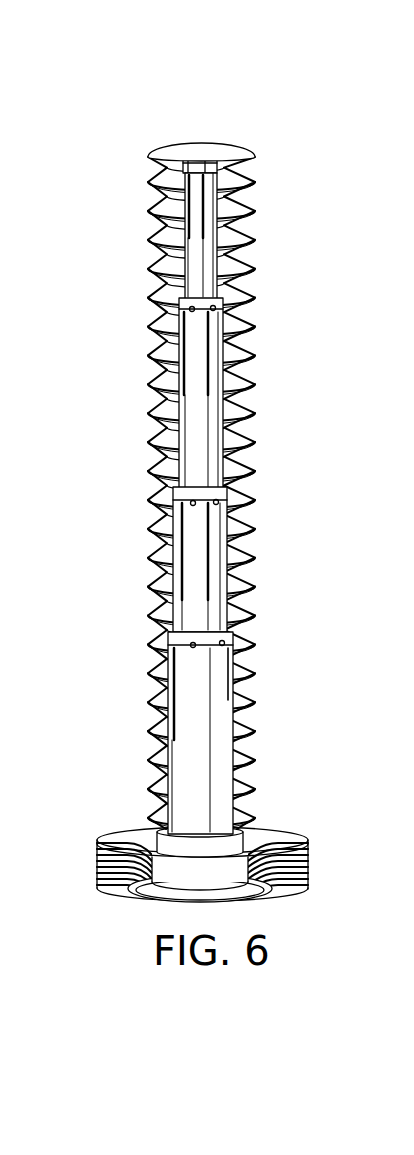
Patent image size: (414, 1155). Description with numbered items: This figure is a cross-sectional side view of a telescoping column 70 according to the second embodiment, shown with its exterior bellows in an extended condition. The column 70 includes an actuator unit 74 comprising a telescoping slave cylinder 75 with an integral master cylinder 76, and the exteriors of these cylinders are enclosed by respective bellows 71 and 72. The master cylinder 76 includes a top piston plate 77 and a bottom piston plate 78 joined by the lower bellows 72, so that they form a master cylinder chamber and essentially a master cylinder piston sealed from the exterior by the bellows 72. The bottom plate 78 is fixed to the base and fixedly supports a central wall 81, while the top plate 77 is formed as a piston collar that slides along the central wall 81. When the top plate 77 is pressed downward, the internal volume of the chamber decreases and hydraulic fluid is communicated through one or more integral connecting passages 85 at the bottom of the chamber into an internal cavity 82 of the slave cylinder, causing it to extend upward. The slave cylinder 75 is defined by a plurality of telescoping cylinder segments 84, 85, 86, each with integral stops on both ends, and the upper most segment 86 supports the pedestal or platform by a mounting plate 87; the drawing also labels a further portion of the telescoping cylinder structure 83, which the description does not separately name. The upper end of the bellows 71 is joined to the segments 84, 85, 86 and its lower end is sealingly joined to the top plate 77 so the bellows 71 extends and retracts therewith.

The telescoping column 70 is at (204, 486).
The upper bellows 71 is at (251, 206).
The lower bellows 72 is at (309, 876).
The actuator unit 74 is at (140, 125).
The slave cylinder 75 is at (250, 402).
The master cylinder 76 is at (98, 858).
The top piston plate 77 is at (122, 830).
The bottom piston plate 78 is at (148, 895).
The central wall 81 is at (252, 672).
The internal cavity 82 is at (266, 847).
The second telescoping section 83 is at (245, 297).
The telescoping cylinder segment 84 is at (220, 543).
The connecting passage 85 is at (158, 393).
The upper most segment 86 is at (153, 252).
The mounting plate 87 is at (218, 143).